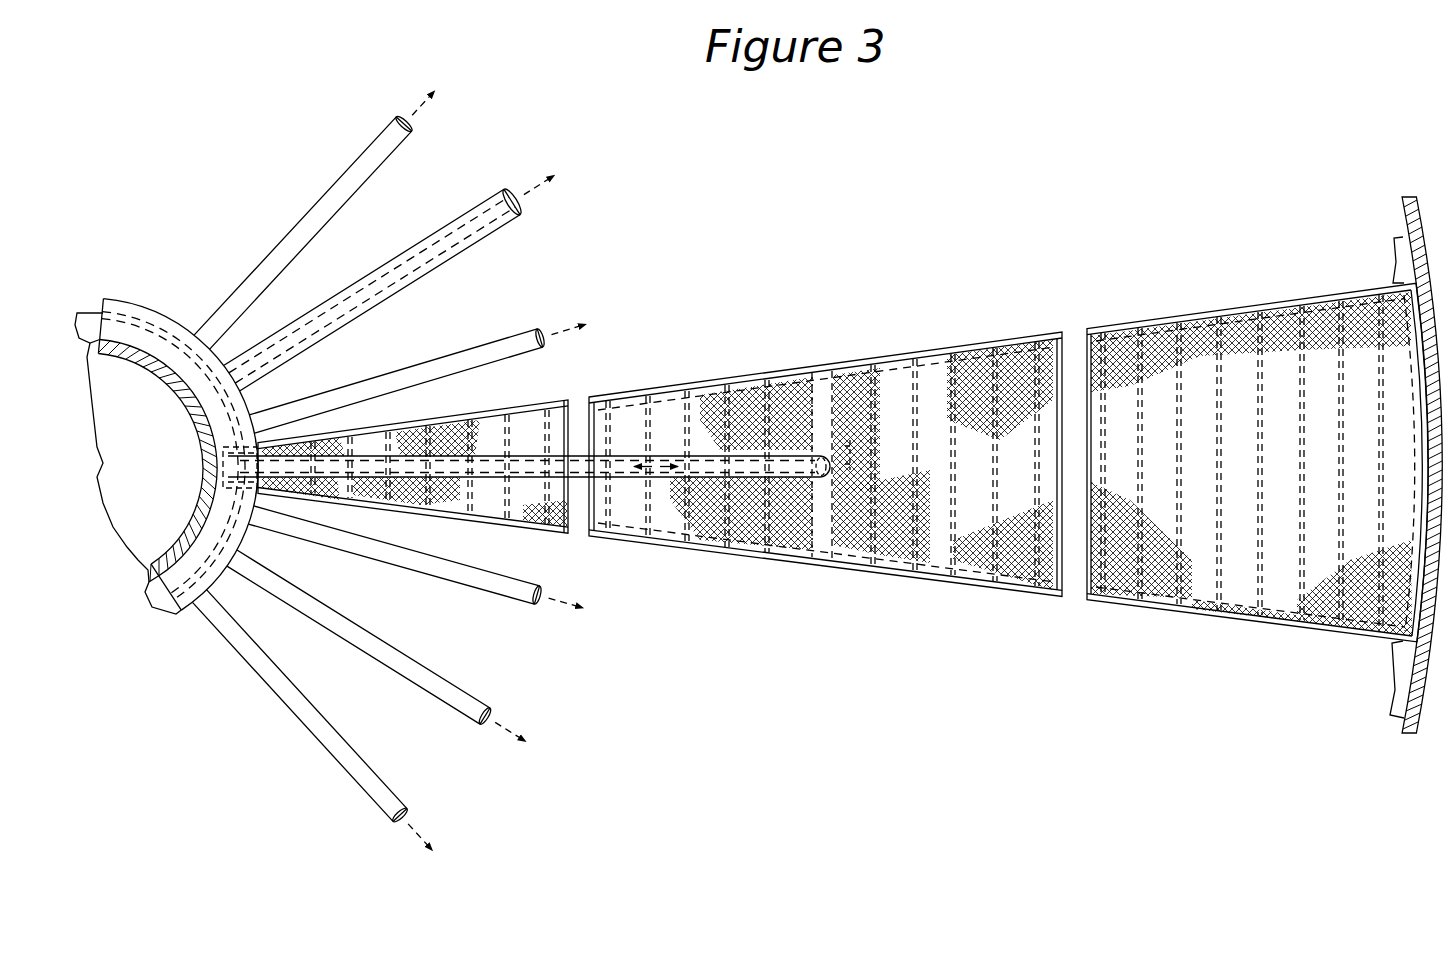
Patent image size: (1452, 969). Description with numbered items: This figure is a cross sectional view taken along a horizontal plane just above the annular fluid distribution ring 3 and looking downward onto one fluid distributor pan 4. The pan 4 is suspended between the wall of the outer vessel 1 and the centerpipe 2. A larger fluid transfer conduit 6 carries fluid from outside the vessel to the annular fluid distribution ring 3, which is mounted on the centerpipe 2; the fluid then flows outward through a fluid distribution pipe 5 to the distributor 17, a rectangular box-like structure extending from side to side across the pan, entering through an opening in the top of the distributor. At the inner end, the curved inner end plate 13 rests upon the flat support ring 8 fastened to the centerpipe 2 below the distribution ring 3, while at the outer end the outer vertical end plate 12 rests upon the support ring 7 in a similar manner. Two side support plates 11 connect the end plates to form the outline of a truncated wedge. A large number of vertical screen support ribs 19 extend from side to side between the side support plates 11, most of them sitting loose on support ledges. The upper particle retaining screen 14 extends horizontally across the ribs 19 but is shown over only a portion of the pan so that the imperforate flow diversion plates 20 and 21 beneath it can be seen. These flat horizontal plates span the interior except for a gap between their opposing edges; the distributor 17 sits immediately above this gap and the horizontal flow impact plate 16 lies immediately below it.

The outer vessel 1 is at (1400, 214).
The centerpipe 2 is at (160, 373).
The annular fluid distribution ring 3 is at (160, 313).
The fluid distributor pan 4 is at (452, 521).
The fluid distribution pipe 5 is at (407, 257).
The fluid transfer conduit 6 is at (460, 262).
The support ring 7 is at (1396, 672).
The flat support ring 8 is at (157, 598).
The side support plates 11 is at (658, 387).
The outer vertical end plate 12 is at (1422, 427).
The curved inner end plate 13 is at (221, 471).
The upper particle retaining screen 14 is at (447, 428).
The horizontal flow impact plate 16 is at (852, 460).
The distributor 17 is at (823, 543).
The screen support ribs 19 is at (477, 445).
The outer flow diversion plate 20 is at (1273, 589).
The inner flow diversion plate 21 is at (633, 518).